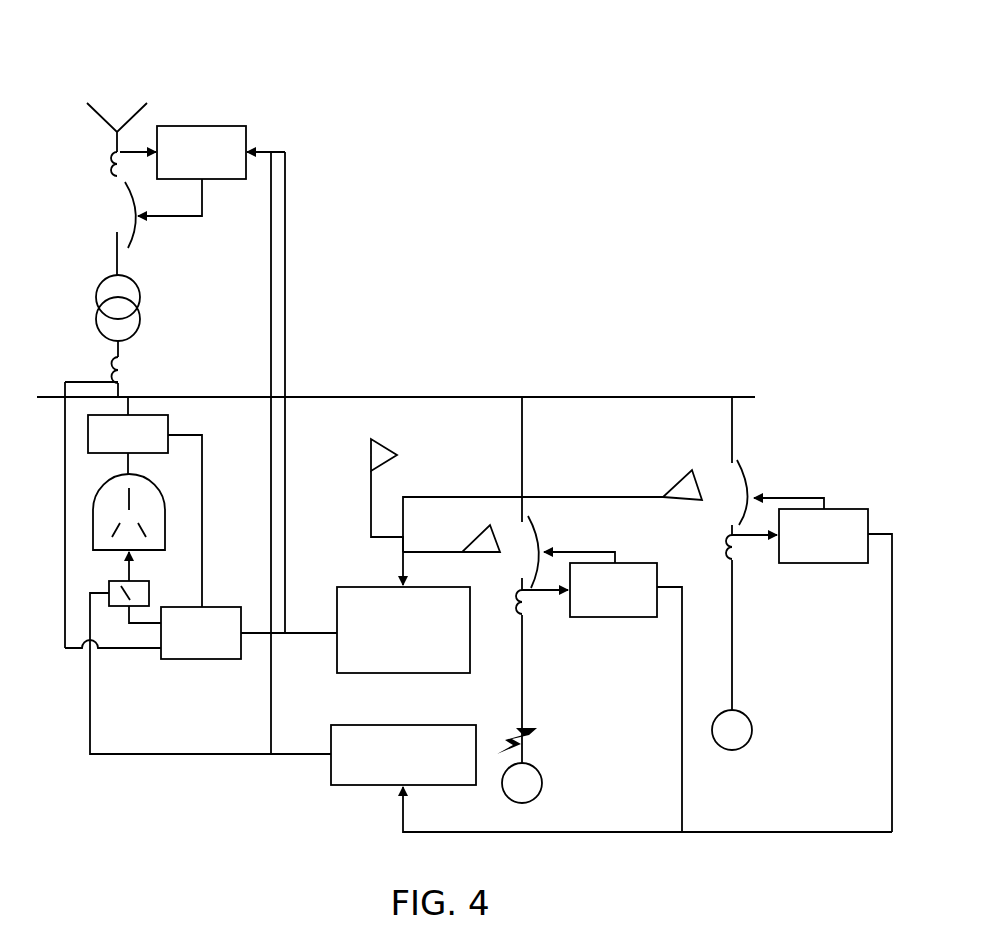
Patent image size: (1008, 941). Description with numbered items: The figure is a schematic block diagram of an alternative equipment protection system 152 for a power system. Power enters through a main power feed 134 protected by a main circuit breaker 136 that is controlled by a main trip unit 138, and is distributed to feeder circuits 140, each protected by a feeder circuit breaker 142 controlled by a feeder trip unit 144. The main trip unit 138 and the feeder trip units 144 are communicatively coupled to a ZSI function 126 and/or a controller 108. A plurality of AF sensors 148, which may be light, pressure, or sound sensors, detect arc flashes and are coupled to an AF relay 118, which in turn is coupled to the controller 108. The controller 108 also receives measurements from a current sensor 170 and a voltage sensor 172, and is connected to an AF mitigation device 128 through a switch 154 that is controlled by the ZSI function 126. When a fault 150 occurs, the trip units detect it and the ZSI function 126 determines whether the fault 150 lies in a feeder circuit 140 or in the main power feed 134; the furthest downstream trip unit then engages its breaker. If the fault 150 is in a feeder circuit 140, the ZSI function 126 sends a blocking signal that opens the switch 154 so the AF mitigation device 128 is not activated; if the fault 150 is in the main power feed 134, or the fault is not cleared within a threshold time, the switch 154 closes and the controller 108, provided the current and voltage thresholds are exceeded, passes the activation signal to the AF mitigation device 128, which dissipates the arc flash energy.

The main trip unit 138 is at (200, 126).
The main circuit breaker 136 is at (123, 192).
The main power feed 134 is at (116, 259).
The current sensor 170 is at (128, 367).
The voltage sensor 172 is at (148, 446).
The AF mitigation device 128 is at (166, 519).
The switch 154 is at (180, 578).
The controller 108 is at (221, 644).
The AF relay 118 is at (344, 587).
The AF sensors 148 is at (386, 444).
The feeder circuit breaker 142 is at (541, 530).
The feeder trip units 144 is at (640, 562).
The feeder circuit 140 is at (525, 666).
The fault 150 is at (539, 733).
The ZSI function 126 is at (353, 789).
The equipment protection system 152 is at (673, 133).